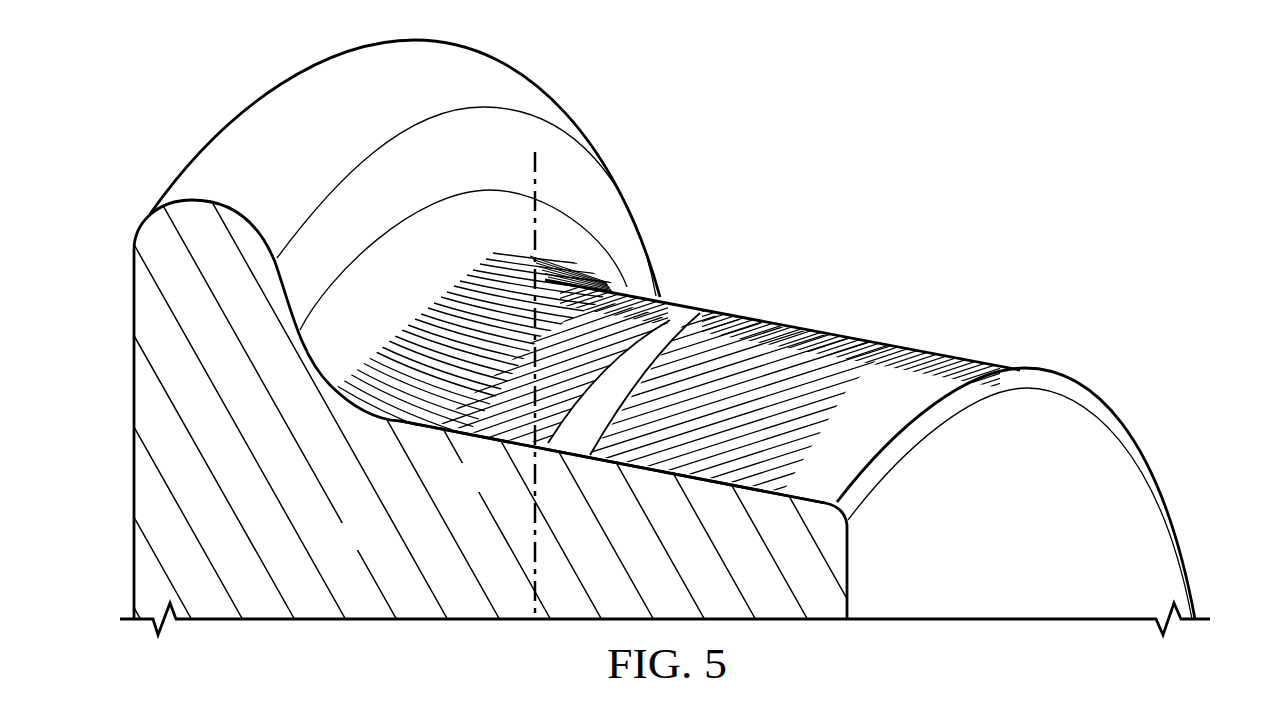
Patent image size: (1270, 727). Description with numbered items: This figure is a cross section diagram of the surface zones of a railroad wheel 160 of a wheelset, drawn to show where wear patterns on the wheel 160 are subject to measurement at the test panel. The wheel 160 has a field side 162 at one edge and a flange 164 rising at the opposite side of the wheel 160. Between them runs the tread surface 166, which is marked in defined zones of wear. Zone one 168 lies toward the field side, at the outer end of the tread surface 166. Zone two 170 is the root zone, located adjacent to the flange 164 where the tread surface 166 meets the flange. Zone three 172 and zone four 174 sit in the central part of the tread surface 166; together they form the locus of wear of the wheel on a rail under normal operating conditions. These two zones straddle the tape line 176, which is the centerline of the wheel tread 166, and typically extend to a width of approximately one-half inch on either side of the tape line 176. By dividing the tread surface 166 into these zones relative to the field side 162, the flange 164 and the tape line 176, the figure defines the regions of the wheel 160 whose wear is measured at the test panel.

The railroad wheel 160 is at (391, 493).
The field side 162 is at (1140, 492).
The flange 164 is at (245, 160).
The tread surface 166 is at (482, 436).
The zone 1 168 is at (904, 329).
The zone 2 170 is at (644, 280).
The zone 3 172 is at (731, 300).
The zone 4 174 is at (802, 311).
The tape line 176 is at (533, 160).